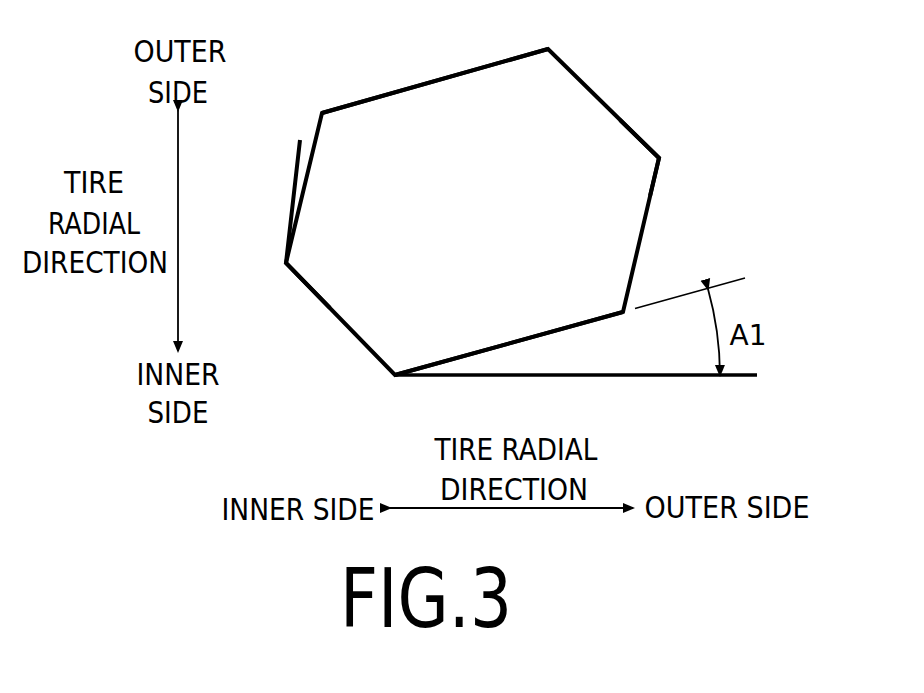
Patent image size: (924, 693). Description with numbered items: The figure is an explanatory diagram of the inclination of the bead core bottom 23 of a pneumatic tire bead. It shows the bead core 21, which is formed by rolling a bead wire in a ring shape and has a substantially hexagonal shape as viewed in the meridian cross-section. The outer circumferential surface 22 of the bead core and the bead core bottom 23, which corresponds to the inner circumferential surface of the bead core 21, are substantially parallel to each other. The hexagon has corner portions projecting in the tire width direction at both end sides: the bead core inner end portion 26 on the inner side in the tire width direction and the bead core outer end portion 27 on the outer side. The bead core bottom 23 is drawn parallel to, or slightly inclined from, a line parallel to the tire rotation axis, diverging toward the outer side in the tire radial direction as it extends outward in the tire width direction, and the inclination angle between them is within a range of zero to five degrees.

The bead core 21 is at (621, 95).
The outer circumferential surface of the bead core 22 is at (418, 83).
The bead core bottom 23 is at (527, 342).
The bead core inner end portion 26 is at (284, 263).
The bead core outer end portion 27 is at (661, 160).